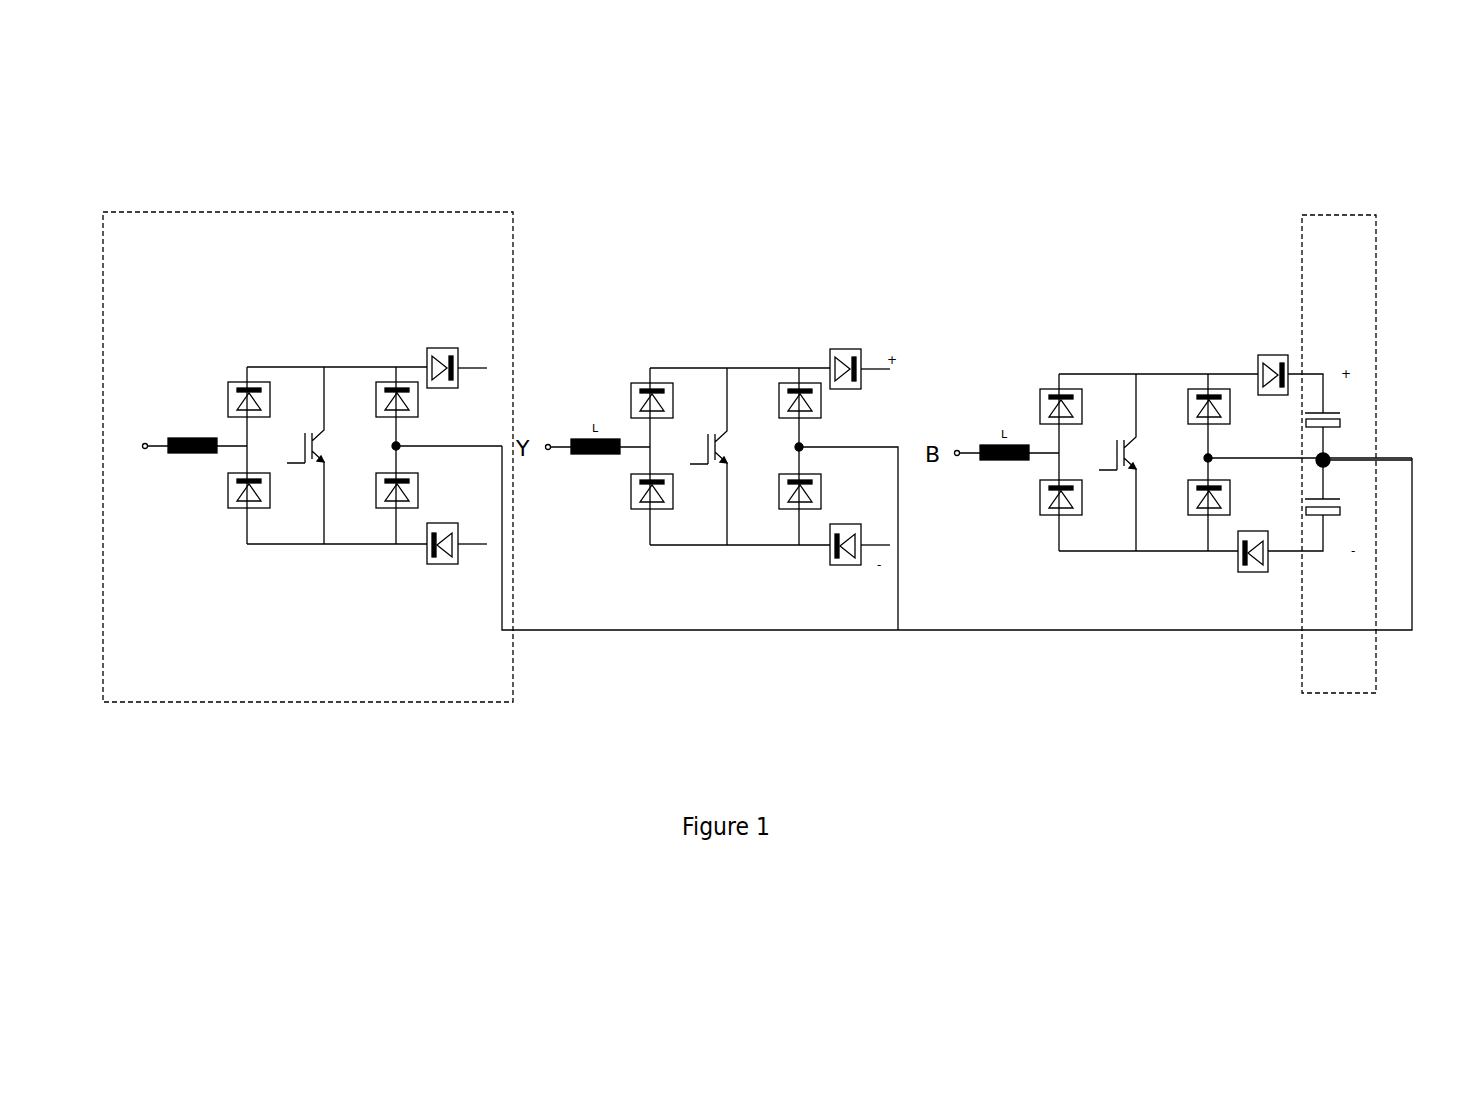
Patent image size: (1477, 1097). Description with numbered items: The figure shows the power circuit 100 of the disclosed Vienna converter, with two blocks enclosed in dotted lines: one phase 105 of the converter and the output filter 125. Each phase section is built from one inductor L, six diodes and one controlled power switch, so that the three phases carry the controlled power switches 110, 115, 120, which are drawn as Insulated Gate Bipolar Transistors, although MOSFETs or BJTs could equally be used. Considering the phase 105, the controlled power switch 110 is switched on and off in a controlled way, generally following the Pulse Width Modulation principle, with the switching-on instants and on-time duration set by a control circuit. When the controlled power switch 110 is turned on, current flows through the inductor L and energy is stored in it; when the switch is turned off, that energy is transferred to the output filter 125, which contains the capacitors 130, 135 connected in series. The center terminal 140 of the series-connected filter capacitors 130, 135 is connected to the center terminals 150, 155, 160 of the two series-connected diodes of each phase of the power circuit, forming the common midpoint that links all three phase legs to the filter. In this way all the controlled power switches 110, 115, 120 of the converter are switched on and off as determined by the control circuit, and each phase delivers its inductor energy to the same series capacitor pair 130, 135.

The power circuit 100 is at (267, 167).
The phase 105 is at (515, 203).
The controlled power switch 110 is at (310, 406).
The controlled power switch 115 is at (672, 415).
The controlled power switch 120 is at (1083, 419).
The output filter 125 is at (1285, 203).
The capacitor 130 is at (1351, 418).
The capacitor 135 is at (1321, 538).
The center terminal 140 is at (1352, 457).
The center terminal 150 is at (410, 453).
The center terminal 155 is at (937, 601).
The center terminal 160 is at (1261, 636).